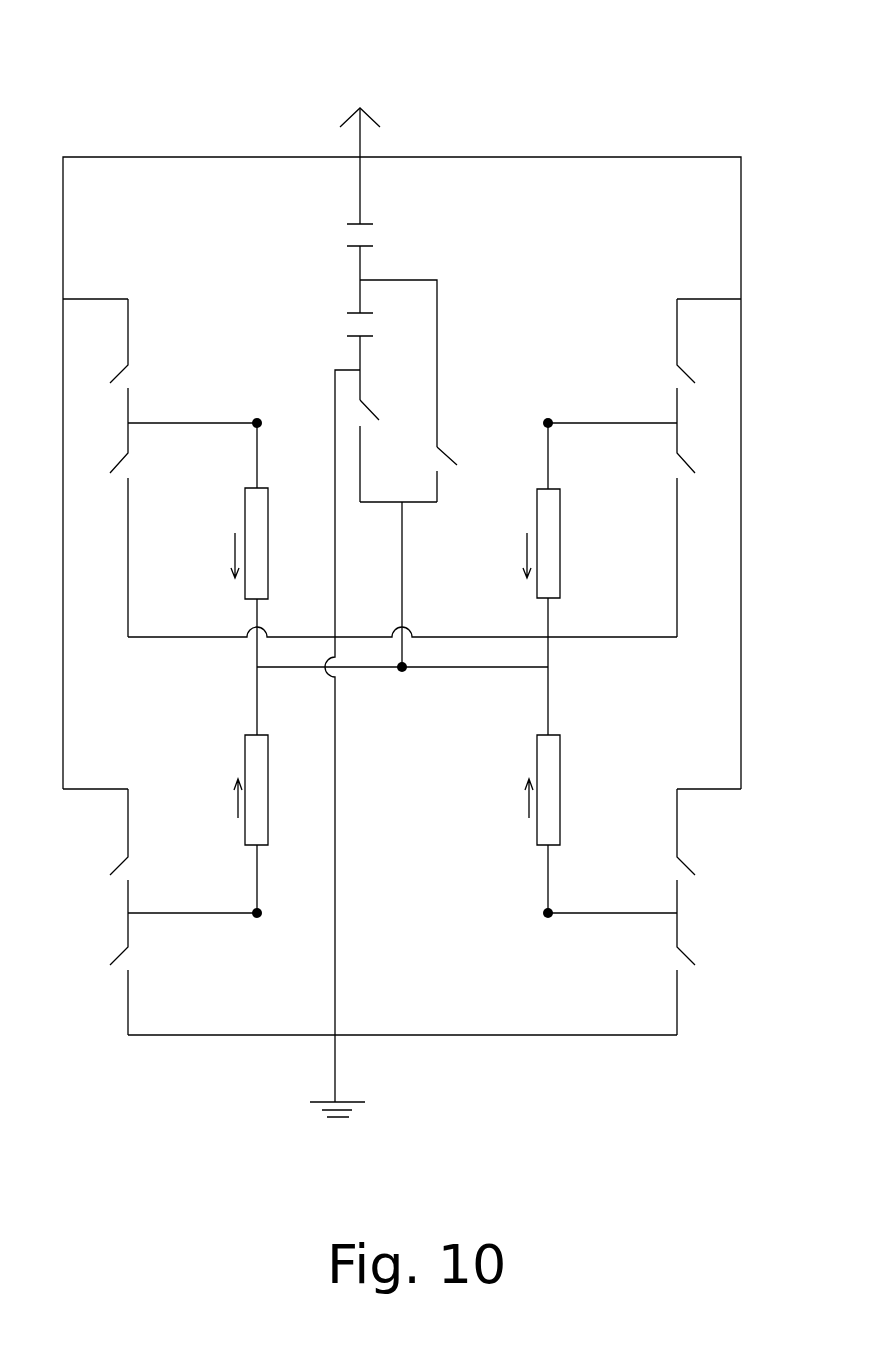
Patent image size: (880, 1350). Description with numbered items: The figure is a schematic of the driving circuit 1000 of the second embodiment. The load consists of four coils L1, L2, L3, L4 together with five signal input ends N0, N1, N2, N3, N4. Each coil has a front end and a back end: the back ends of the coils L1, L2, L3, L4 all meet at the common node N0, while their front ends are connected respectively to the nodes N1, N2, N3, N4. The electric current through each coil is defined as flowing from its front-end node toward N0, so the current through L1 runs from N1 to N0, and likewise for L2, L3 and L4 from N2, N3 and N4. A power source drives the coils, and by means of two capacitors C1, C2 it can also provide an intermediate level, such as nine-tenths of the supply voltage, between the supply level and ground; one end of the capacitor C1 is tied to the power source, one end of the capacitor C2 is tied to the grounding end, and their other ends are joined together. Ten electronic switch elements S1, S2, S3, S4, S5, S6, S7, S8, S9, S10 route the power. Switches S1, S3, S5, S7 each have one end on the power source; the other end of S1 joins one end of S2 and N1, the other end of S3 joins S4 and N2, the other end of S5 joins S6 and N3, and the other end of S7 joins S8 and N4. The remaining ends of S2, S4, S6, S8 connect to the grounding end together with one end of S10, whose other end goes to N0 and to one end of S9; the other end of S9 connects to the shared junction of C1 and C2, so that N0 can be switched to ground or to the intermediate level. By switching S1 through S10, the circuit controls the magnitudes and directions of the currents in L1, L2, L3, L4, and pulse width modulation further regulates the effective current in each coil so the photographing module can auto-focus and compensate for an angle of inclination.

The driving circuit 1000 is at (693, 129).
The electronic switch element S1 is at (137, 361).
The electronic switch element S2 is at (137, 530).
The electronic switch element S3 is at (137, 851).
The electronic switch element S4 is at (137, 974).
The electronic switch element S5 is at (705, 361).
The electronic switch element S6 is at (705, 530).
The electronic switch element S7 is at (705, 851).
The electronic switch element S8 is at (705, 974).
The electronic switch element S9 is at (456, 468).
The electronic switch element S10 is at (388, 444).
The capacitor C1 is at (382, 234).
The capacitor C2 is at (382, 325).
The coil L1 is at (255, 579).
The coil L2 is at (255, 824).
The coil L3 is at (547, 579).
The coil L4 is at (547, 824).
The signal input end N0 is at (402, 683).
The signal input end N1 is at (213, 423).
The signal input end N2 is at (213, 913).
The signal input end N3 is at (592, 423).
The signal input end N4 is at (592, 913).